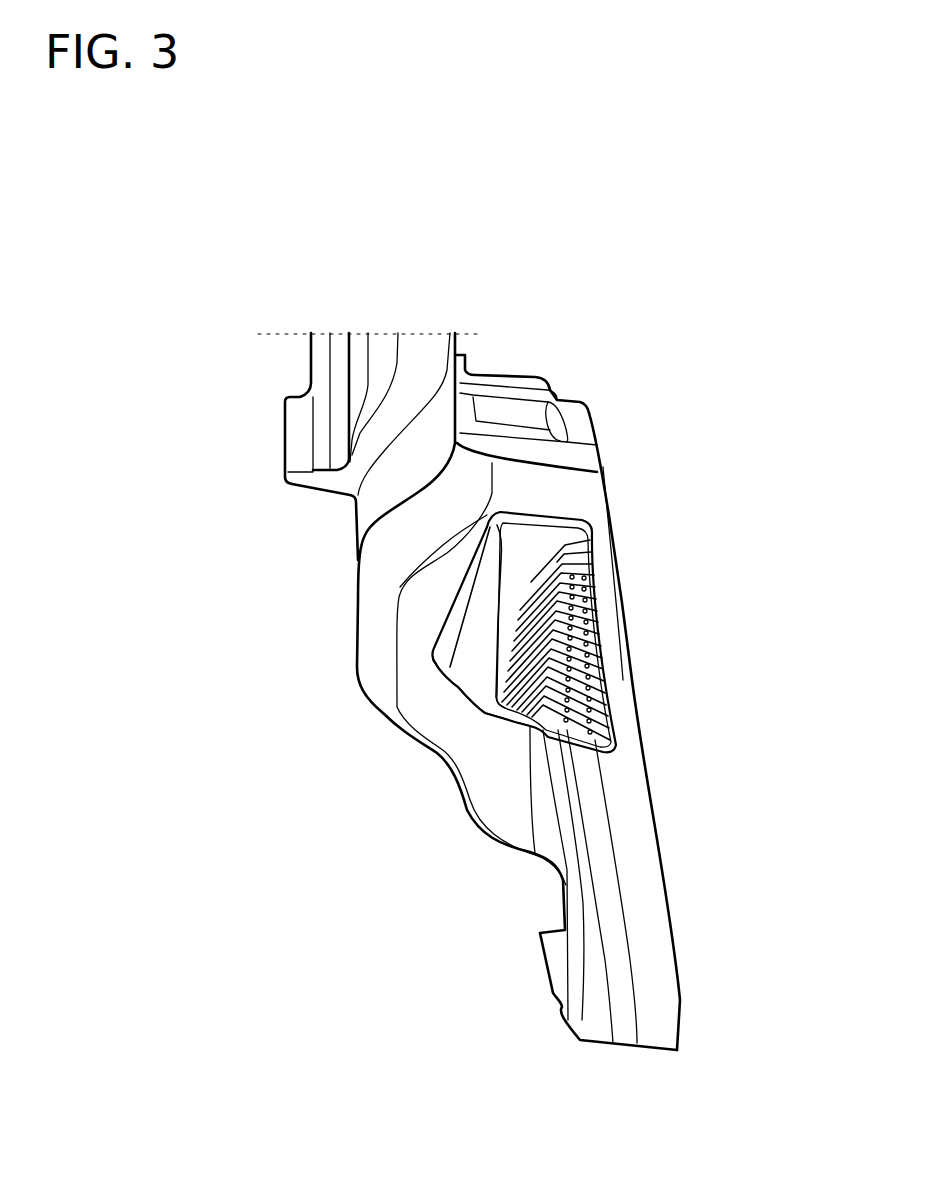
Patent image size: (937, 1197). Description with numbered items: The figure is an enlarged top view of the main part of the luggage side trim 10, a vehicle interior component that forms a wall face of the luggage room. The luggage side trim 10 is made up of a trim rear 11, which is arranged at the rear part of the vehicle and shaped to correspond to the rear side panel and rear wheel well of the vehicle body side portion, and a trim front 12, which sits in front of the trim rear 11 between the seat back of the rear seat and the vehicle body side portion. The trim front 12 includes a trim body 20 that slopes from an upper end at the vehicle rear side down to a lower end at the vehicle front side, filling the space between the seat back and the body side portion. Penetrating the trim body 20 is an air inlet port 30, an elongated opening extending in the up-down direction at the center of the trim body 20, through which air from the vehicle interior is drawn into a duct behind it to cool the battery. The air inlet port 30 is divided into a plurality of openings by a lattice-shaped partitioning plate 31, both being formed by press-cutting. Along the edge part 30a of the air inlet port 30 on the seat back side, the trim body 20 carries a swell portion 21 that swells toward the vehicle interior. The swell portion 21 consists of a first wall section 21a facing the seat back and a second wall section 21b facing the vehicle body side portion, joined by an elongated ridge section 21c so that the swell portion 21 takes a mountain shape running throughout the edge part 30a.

The luggage side trim 10 is at (612, 328).
The trim rear 11 is at (493, 370).
The trim front 12 is at (648, 749).
The trim body 20 is at (625, 862).
The swell portion 21 is at (462, 718).
The first wall section 21a is at (487, 614).
The second wall section 21b is at (522, 722).
The ridge section 21c is at (497, 655).
The air inlet port 30 is at (578, 589).
The edge part 30a is at (523, 588).
The partitioning plate 31 is at (595, 588).